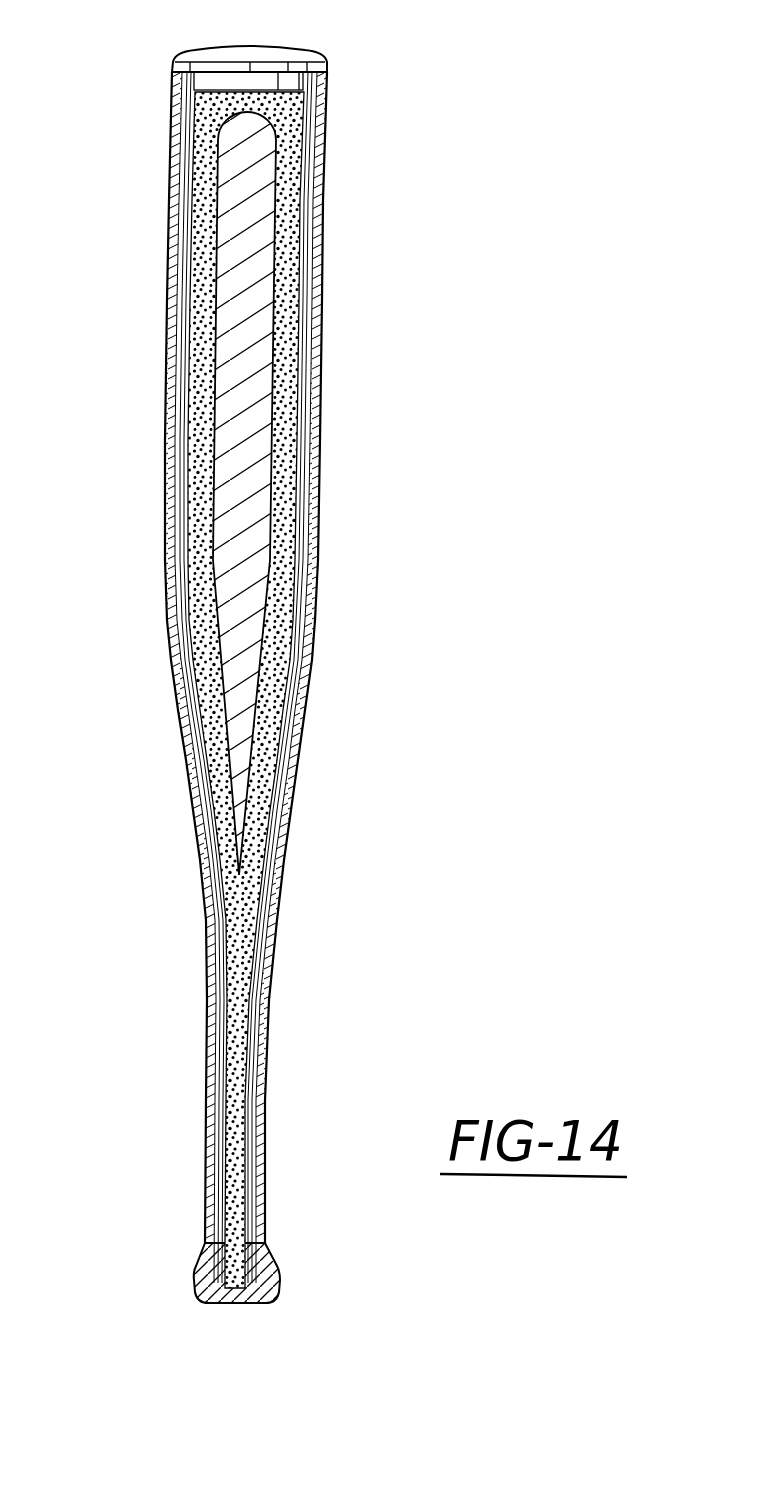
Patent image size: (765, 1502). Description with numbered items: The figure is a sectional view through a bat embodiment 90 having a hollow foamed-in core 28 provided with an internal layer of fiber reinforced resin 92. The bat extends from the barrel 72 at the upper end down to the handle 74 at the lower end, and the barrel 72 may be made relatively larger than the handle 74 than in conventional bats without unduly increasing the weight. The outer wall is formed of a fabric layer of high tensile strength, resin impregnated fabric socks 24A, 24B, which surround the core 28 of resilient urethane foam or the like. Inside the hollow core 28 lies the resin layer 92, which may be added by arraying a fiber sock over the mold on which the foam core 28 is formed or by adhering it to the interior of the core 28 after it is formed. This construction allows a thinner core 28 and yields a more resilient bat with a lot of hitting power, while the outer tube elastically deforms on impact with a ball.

The barrel 72 is at (207, 54).
The fabric sock 24A is at (177, 163).
The fabric sock 24B is at (178, 319).
The core 28 is at (290, 137).
The internal layer of fiber reinforced resin 92 is at (258, 307).
The bat embodiment 90 is at (326, 435).
The handle 74 is at (195, 1296).